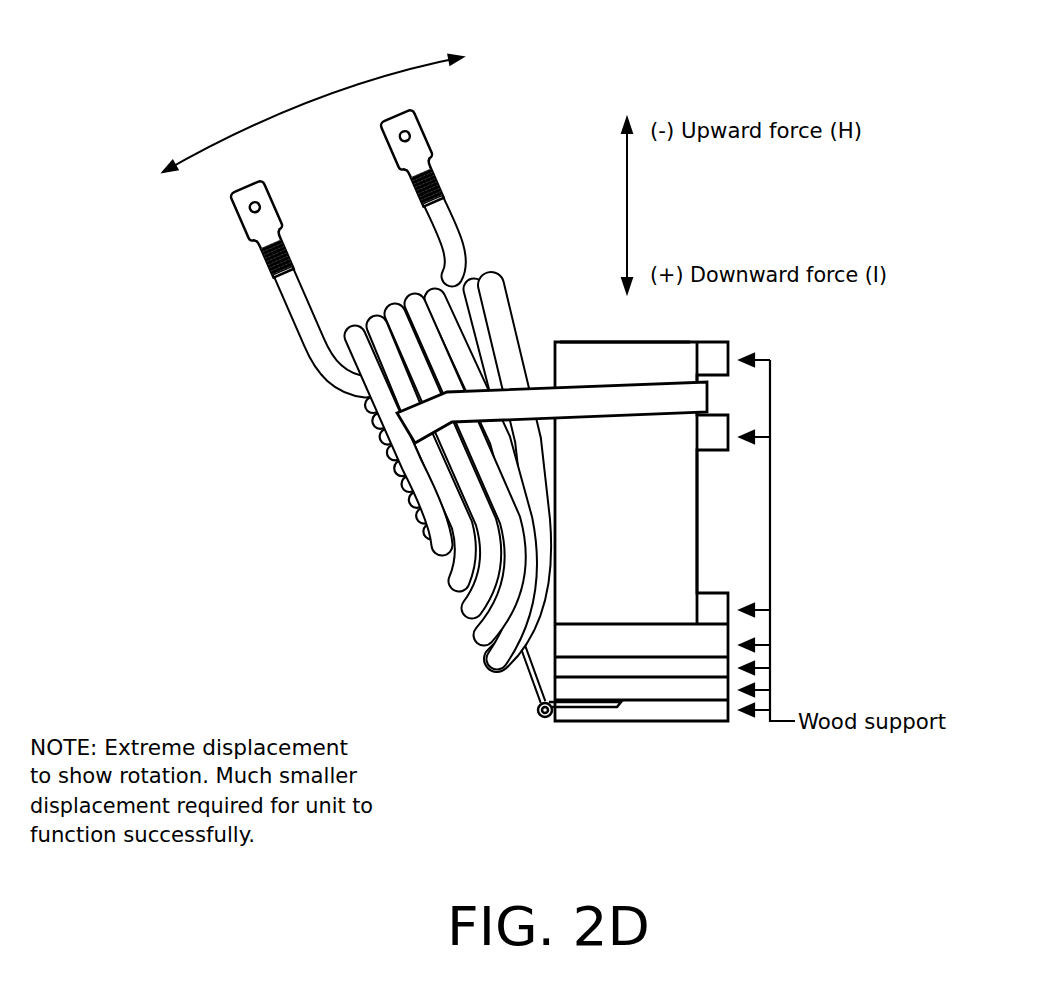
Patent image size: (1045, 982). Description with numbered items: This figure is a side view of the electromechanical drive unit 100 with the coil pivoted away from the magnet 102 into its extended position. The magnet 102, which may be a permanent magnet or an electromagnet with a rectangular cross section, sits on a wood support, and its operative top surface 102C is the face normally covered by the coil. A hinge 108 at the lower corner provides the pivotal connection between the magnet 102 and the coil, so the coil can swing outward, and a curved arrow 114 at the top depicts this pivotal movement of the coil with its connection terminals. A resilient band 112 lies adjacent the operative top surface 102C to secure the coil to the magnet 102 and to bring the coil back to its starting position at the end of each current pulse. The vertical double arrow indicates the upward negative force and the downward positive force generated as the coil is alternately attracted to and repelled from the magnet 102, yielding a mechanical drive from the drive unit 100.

The drive unit 100 is at (167, 78).
The curved arrow 114 is at (313, 113).
The magnet 102 is at (672, 538).
The operative top surface 102C is at (598, 342).
The resilient band 112 is at (698, 402).
The hinge 108 is at (527, 718).